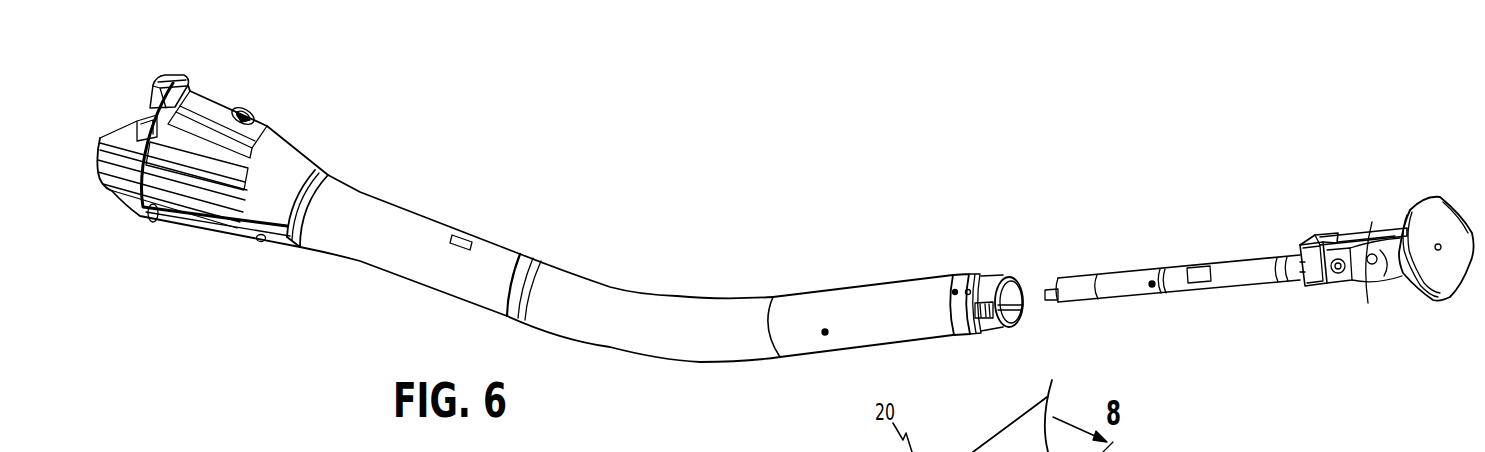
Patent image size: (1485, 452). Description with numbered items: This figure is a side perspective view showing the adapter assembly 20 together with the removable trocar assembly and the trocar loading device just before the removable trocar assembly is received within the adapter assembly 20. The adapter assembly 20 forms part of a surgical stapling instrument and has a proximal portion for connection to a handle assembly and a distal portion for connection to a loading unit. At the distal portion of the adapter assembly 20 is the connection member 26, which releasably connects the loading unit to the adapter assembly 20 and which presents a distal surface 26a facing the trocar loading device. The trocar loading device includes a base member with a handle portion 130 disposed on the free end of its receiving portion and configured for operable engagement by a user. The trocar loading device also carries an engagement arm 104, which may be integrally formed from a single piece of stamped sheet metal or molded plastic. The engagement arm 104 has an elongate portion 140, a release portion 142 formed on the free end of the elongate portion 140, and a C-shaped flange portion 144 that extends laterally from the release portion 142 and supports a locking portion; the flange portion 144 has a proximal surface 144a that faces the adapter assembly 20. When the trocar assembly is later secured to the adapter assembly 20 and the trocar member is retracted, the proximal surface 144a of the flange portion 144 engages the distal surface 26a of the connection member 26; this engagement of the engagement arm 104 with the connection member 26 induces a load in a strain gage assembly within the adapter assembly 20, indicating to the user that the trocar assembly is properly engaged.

The adapter assembly 20 is at (578, 223).
The connection member 26 is at (1003, 263).
The distal surface 26a is at (1012, 277).
The engagement arm 104 is at (1367, 222).
The handle portion 130 is at (1443, 193).
The elongate portion 140 is at (1373, 260).
The release portion 142 is at (1317, 238).
The C-shaped flange portion 144 is at (1313, 290).
The channel of coupling block 144a is at (1301, 280).